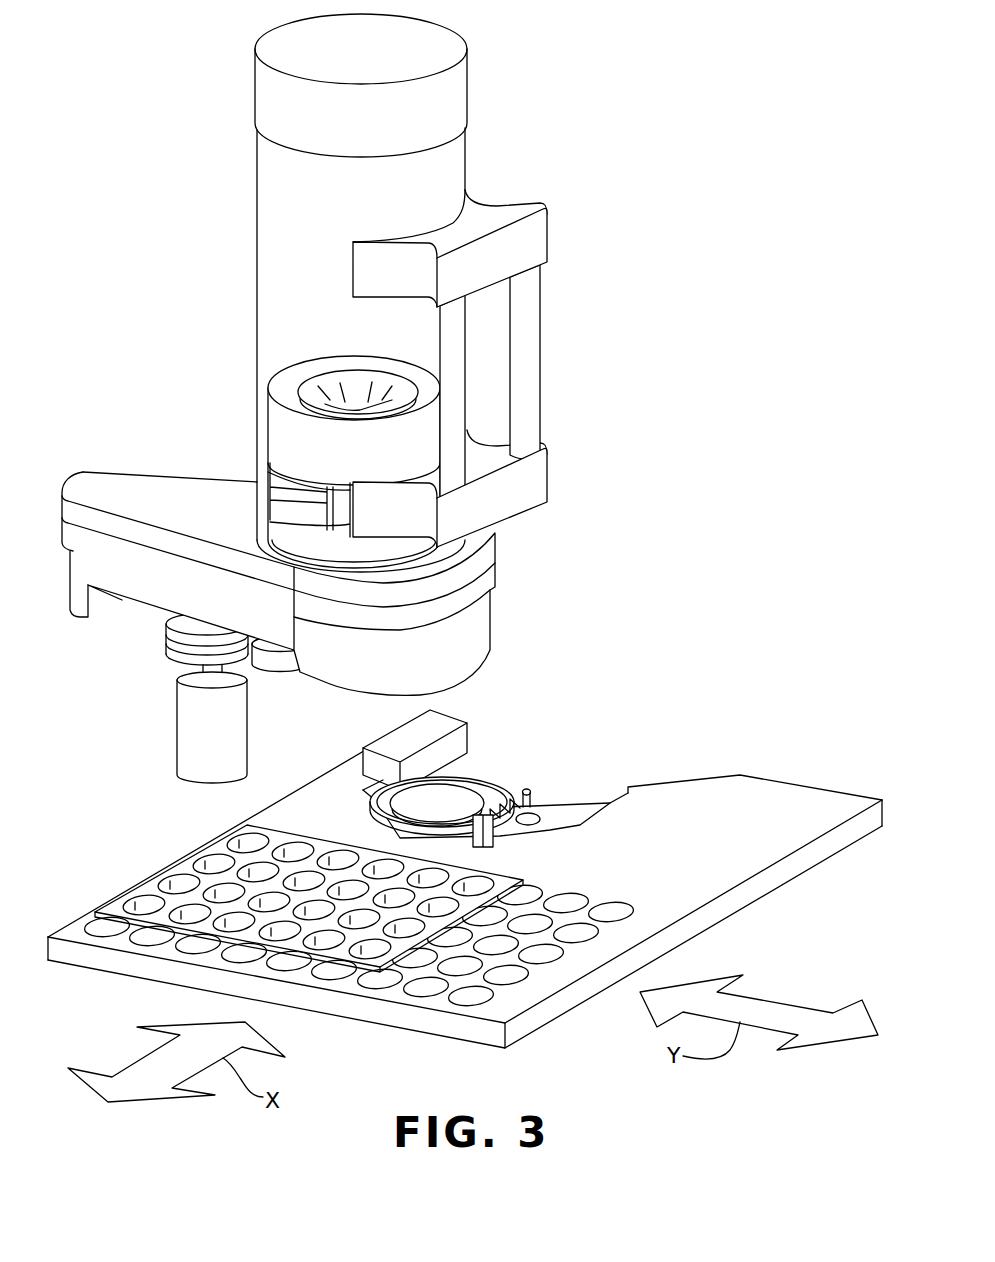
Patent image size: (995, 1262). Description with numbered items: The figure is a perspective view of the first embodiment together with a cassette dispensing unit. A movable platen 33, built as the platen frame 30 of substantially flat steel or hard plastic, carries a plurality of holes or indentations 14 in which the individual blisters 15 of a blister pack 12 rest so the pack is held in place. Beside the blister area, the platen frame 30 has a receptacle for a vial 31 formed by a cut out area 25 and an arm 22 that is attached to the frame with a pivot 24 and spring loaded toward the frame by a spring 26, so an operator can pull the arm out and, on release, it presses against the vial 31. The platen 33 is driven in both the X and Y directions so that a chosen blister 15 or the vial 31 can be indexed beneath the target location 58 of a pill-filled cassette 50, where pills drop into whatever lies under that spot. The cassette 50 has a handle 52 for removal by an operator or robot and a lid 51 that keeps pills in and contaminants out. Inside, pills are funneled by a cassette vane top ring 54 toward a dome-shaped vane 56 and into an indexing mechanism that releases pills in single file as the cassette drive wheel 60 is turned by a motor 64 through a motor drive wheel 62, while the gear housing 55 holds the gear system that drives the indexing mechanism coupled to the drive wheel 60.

The blister pack 12 is at (232, 834).
The holes or indentations 14 is at (615, 913).
The blisters 15 is at (216, 858).
The arm 22 is at (493, 790).
The pivot 24 is at (531, 825).
The cut out area 25 is at (627, 757).
The spring 26 is at (514, 791).
The platen frame 30 is at (802, 785).
The vial 31 is at (402, 812).
The movable platen 33 is at (561, 1060).
The cassette 50 is at (343, 402).
The lid 51 is at (284, 47).
The handle 52 is at (541, 318).
The cassette vane top ring 54 is at (288, 434).
The gear housing 55 is at (100, 476).
The dome-shaped vane 56 is at (360, 385).
The target location 58 is at (460, 695).
The cassette drive wheel 60 is at (270, 664).
The motor drive wheel 62 is at (160, 640).
The motor 64 is at (178, 742).